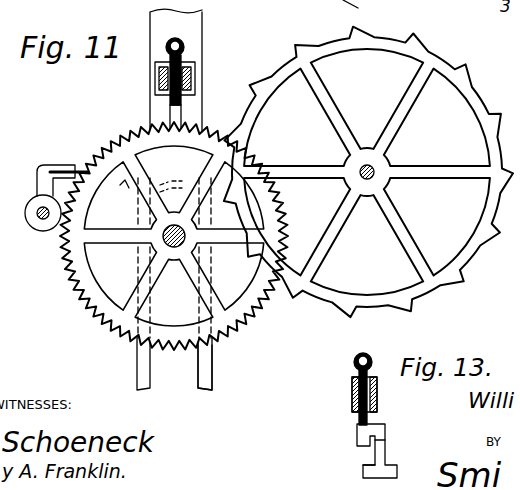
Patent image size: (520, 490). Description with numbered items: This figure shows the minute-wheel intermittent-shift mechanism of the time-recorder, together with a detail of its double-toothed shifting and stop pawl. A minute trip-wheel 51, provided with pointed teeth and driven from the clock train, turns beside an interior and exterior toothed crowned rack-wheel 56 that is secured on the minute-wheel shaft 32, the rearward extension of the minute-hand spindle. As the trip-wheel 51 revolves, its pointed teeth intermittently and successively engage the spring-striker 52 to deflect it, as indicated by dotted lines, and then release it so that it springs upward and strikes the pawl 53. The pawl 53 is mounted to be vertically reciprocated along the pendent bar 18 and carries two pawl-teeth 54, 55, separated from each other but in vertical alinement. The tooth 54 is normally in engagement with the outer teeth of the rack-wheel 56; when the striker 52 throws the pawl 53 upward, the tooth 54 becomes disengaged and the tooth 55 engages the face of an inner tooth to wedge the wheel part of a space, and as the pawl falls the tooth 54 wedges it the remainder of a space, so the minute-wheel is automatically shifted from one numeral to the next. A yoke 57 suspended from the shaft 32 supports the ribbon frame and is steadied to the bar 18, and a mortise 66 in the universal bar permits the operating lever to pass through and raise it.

In FIG. 11, the bar 18 is at (209, 42).
In FIG. 11, the pawl 53 is at (192, 104).
In FIG. 13, the pawl 53 is at (379, 389).
In FIG. 11, the interior and exterior toothed crowned rack-wheel 56 is at (125, 176).
In FIG. 11, the spring-striker 52 is at (117, 197).
In FIG. 11, the minute-wheel shaft 32 is at (174, 250).
In FIG. 11, the minute trip-wheel 51 is at (368, 172).
In FIG. 11, the yoke 57 is at (218, 367).
In FIG. 11, the mortise 66 is at (363, 10).
In FIG. 13, the pawl-tooth 54 is at (357, 451).
In FIG. 13, the pawl-tooth 55 is at (351, 456).